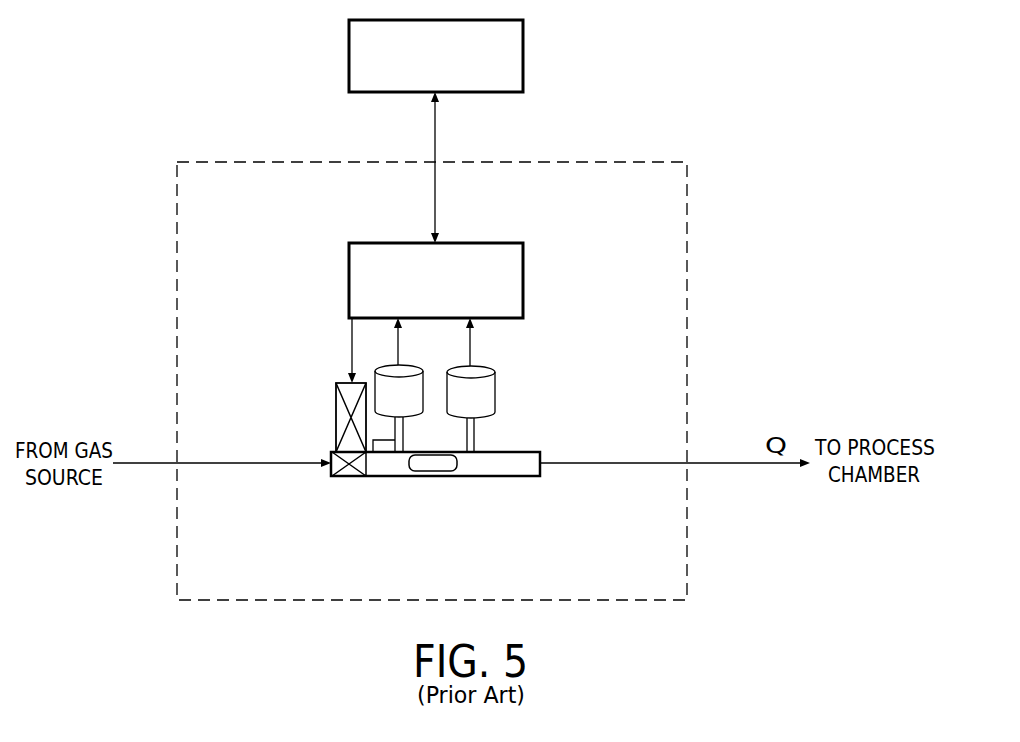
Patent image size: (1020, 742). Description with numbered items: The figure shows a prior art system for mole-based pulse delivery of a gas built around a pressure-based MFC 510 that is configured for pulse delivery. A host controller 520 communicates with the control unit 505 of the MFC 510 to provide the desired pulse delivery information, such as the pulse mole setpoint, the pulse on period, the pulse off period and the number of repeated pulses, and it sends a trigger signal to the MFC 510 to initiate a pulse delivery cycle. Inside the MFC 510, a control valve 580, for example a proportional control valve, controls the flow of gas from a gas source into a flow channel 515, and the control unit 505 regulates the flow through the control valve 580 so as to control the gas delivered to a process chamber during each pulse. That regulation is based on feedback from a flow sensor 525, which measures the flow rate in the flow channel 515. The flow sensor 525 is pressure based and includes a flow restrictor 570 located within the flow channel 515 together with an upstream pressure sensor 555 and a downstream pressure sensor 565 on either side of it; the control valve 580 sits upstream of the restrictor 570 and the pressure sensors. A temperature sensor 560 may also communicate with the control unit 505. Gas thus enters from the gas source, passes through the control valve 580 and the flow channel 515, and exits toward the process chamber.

The control unit 505 is at (523, 243).
The pressure-based MFC 510 is at (641, 160).
The flow channel 515 is at (508, 452).
The host controller 520 is at (523, 59).
The flow sensor 525 is at (416, 500).
The upstream pressure sensor 555 is at (376, 362).
The temperature sensor 560 is at (382, 460).
The downstream pressure sensor 565 is at (501, 381).
The flow restrictor 570 is at (442, 483).
The control valve 580 is at (330, 427).